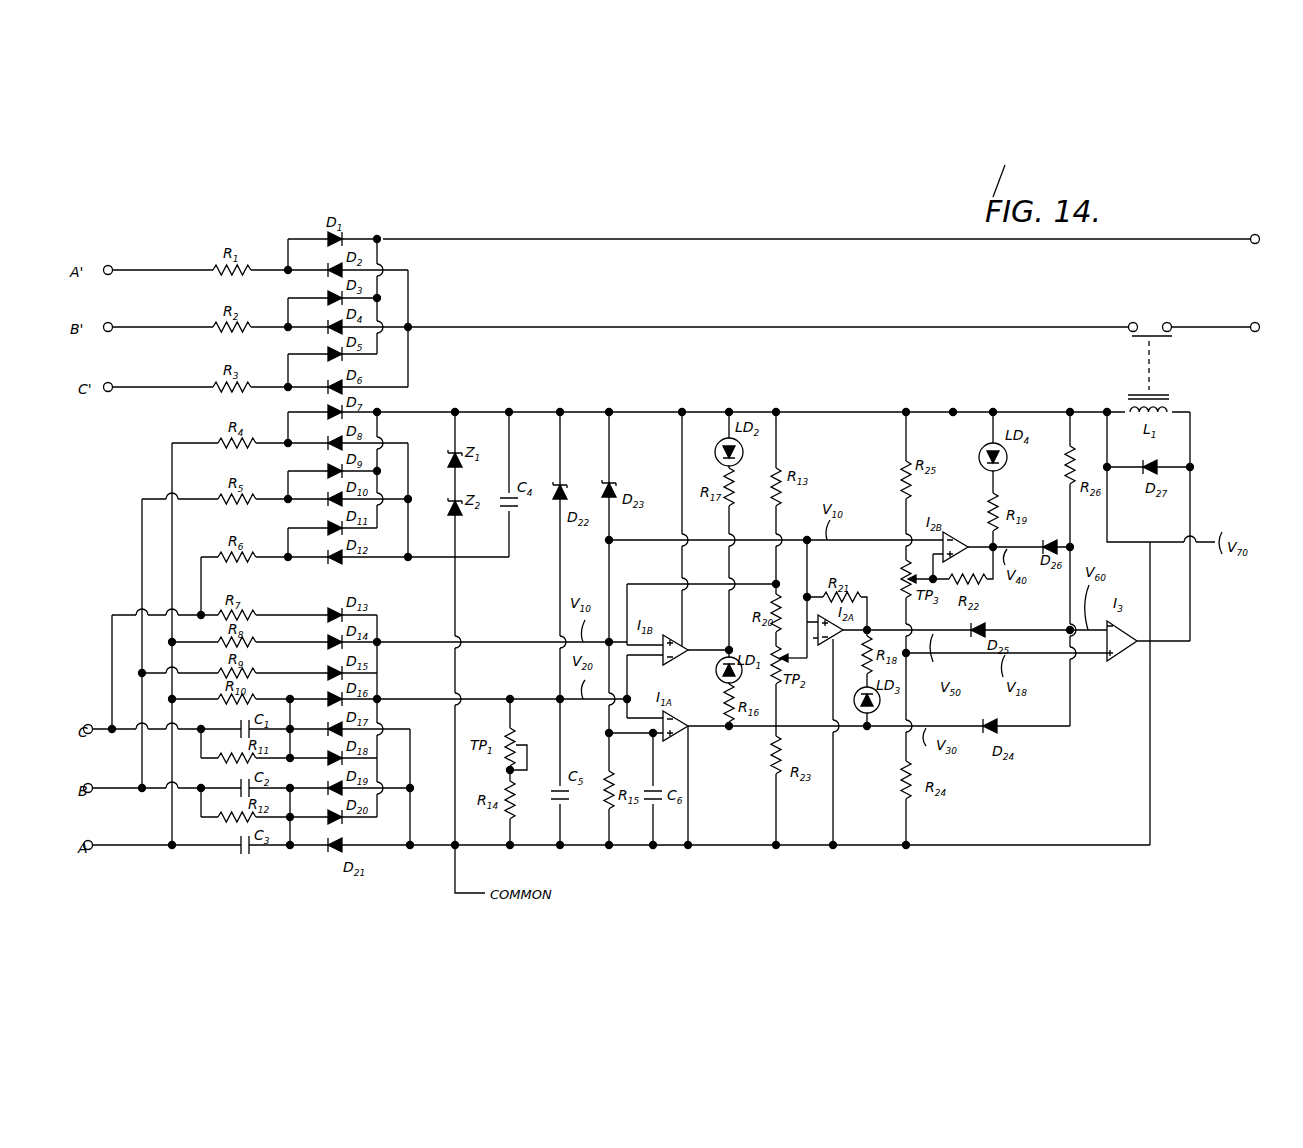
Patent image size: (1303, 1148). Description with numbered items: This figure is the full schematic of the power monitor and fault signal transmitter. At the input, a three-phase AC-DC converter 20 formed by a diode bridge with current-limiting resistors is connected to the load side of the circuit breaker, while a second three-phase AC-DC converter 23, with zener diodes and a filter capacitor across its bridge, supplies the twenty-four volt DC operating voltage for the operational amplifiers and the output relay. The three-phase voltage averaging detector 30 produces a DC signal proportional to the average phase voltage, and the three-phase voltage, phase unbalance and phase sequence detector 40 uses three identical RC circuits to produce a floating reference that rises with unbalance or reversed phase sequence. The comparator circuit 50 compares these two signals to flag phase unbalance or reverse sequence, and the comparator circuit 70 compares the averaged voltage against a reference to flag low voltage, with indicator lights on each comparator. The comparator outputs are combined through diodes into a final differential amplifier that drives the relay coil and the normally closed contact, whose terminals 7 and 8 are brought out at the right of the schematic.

The three-phase AC-DC converter 20 is at (424, 216).
The three-phase AC-DC converter 23 is at (425, 436).
The three-phase voltage averaging detector 30 is at (312, 596).
The three-phase voltage, phase unbalance and phase sequence detector 40 is at (229, 836).
The comparator circuit for phase unbalance and reverse phase sequences 50 is at (713, 746).
The comparator circuit for low voltage 70 is at (859, 551).
The output terminal 7 is at (828, 239).
The output terminal 8 is at (841, 341).